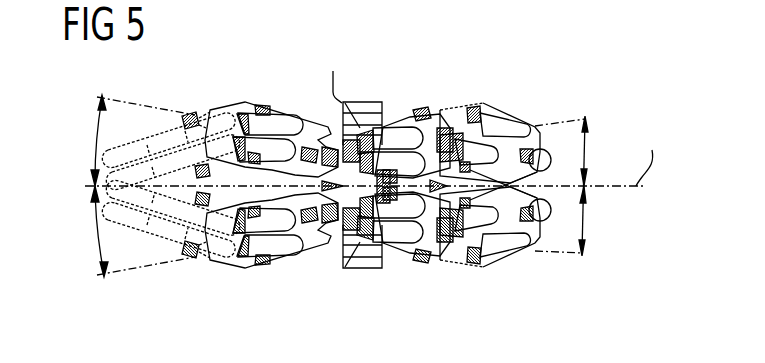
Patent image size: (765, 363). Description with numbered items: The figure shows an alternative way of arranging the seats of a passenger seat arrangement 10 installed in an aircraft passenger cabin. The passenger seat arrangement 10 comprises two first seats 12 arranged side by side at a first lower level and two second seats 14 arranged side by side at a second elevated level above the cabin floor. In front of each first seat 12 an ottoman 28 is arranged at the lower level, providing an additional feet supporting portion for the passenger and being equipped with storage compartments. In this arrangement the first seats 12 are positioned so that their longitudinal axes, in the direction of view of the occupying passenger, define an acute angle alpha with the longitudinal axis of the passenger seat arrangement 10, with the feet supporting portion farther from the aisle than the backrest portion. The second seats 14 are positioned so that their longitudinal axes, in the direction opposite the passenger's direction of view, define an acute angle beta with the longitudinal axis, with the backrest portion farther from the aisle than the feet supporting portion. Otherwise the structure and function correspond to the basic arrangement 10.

The passenger seat arrangement 10 is at (505, 58).
The first seats 12 is at (436, 101).
The second seats 14 is at (300, 97).
The ottoman 28 is at (362, 103).